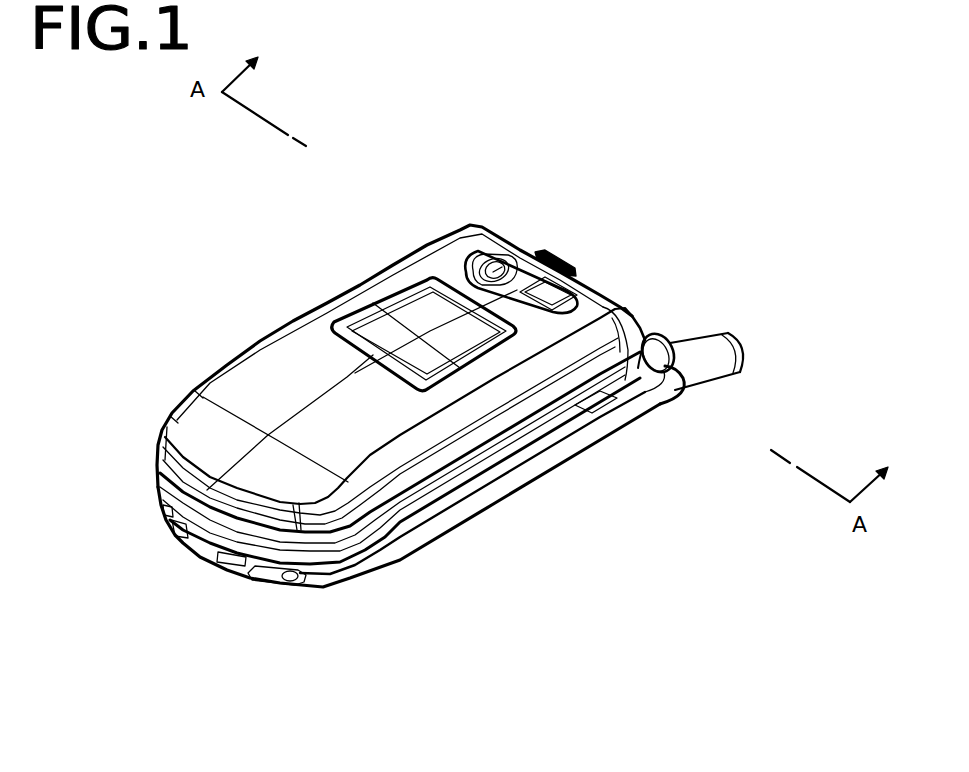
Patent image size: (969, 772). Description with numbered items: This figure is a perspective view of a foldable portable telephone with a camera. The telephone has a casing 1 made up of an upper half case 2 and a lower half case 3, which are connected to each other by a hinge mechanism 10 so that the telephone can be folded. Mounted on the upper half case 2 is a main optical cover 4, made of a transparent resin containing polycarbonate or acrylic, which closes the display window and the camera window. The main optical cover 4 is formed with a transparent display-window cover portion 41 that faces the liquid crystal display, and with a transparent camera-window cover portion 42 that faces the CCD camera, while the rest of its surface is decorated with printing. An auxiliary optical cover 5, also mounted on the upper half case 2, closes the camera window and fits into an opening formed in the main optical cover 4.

The casing 1 is at (592, 600).
The upper half case 2 is at (432, 431).
The lower half case 3 is at (367, 557).
The main optical cover 4 is at (452, 270).
The auxiliary optical cover 5 is at (580, 280).
The hinge mechanism 10 is at (660, 357).
The display-window cover portion 41 is at (380, 337).
The camera-window cover portion 42 is at (500, 268).